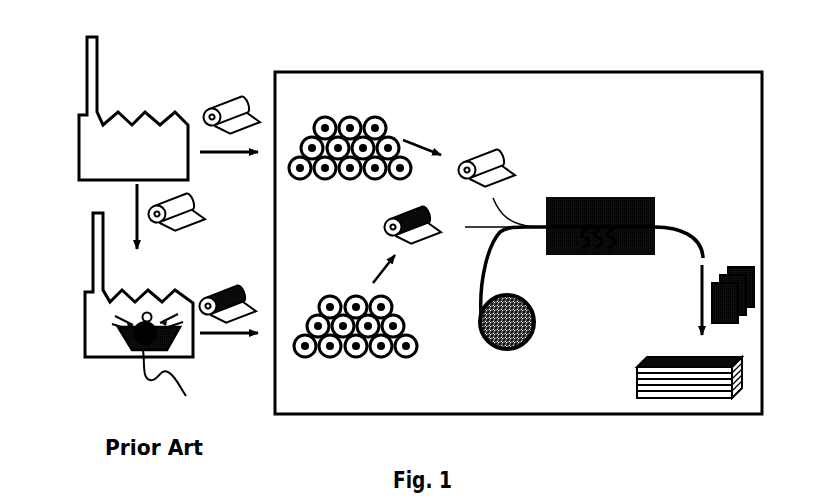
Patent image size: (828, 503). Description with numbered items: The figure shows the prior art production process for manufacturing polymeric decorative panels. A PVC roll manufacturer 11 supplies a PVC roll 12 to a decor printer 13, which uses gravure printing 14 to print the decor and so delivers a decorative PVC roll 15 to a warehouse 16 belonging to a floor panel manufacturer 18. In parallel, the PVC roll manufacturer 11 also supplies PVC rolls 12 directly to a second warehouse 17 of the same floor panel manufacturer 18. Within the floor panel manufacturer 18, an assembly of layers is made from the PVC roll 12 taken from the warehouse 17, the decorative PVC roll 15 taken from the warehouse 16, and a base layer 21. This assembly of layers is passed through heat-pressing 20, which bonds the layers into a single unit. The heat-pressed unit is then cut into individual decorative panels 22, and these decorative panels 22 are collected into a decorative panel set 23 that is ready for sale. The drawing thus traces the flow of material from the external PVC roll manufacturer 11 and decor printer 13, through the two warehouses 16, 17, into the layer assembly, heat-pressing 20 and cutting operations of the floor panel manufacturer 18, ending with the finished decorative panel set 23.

The PVC roll manufacturer 11 is at (133, 108).
The PVC roll 12 is at (318, 171).
The decor printer 13 is at (139, 285).
The gravure printing 14 is at (174, 384).
The decorative PVC roll 15 is at (332, 284).
The warehouse 16 is at (355, 306).
The warehouse 17 is at (365, 129).
The floor panel manufacturer 18 is at (447, 72).
The heat-pressing 20 is at (619, 212).
The base layer 21 is at (504, 306).
The decorative panel 22 is at (708, 300).
The decorative panel set 23 is at (668, 377).